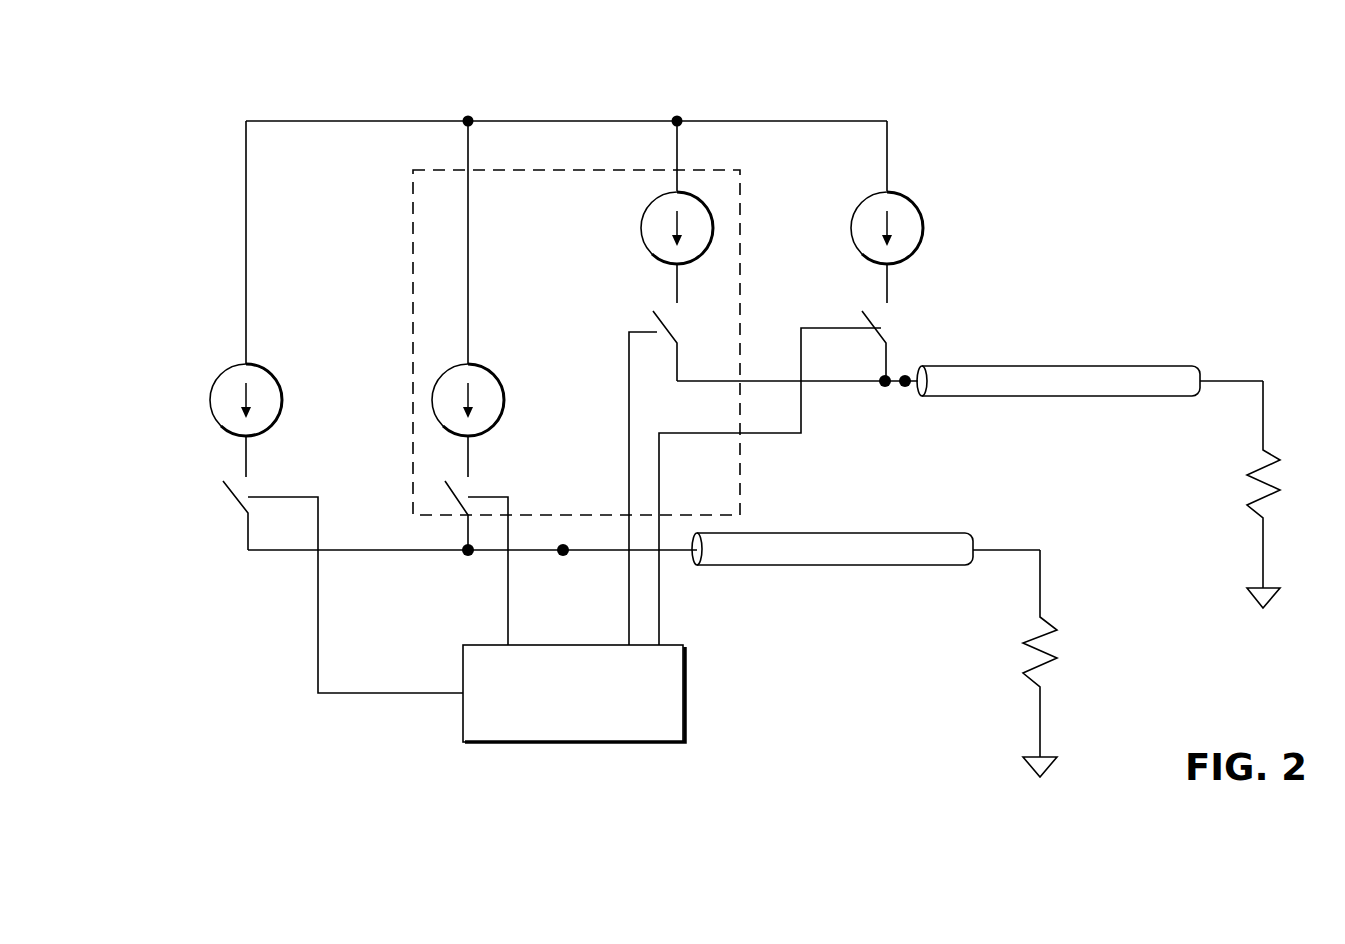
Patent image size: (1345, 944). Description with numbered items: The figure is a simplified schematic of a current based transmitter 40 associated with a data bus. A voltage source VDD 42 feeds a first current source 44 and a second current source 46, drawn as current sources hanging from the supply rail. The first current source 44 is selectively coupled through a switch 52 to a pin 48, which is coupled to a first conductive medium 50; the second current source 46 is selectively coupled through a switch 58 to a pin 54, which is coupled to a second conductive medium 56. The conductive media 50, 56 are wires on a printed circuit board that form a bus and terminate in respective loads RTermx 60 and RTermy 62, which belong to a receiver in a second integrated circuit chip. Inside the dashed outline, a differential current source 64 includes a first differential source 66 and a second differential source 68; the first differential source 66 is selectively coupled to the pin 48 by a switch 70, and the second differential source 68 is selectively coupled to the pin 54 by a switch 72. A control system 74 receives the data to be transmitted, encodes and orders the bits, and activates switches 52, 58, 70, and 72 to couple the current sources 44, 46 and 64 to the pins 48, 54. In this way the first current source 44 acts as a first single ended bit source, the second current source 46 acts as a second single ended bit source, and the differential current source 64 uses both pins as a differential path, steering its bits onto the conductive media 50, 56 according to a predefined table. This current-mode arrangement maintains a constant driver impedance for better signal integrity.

The current based transmitter 40 is at (1072, 157).
The voltage source VDD 42 is at (617, 90).
The first current source 44 is at (272, 365).
The second current source 46 is at (905, 198).
The pin 48 is at (563, 557).
The first conductive medium 50 is at (838, 566).
The switch 52 is at (232, 502).
The pin 54 is at (907, 370).
The second conductive medium 56 is at (1058, 366).
The switch 58 is at (880, 322).
The load RTermx 60 is at (1057, 638).
The load RTermy 62 is at (1275, 455).
The differential current source 64 is at (413, 228).
The first differential source 66 is at (494, 365).
The second differential source 68 is at (642, 222).
The switch 70 is at (448, 500).
The switch 72 is at (672, 330).
The control system 74 is at (686, 693).